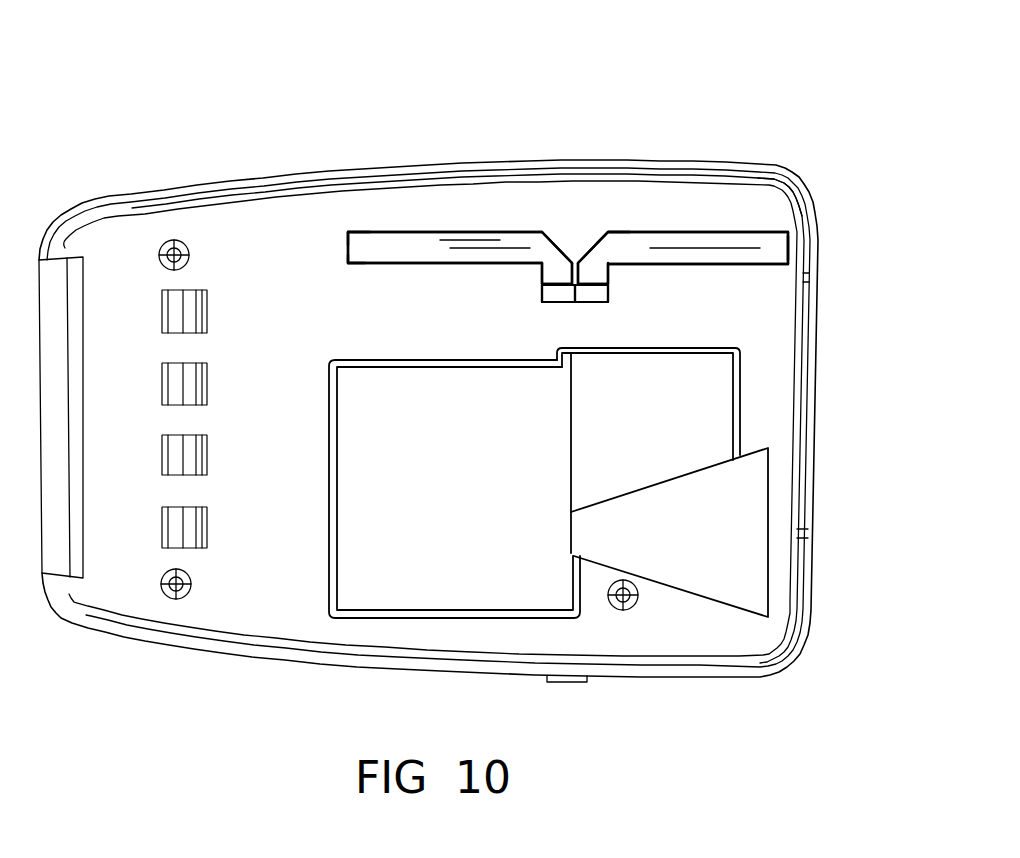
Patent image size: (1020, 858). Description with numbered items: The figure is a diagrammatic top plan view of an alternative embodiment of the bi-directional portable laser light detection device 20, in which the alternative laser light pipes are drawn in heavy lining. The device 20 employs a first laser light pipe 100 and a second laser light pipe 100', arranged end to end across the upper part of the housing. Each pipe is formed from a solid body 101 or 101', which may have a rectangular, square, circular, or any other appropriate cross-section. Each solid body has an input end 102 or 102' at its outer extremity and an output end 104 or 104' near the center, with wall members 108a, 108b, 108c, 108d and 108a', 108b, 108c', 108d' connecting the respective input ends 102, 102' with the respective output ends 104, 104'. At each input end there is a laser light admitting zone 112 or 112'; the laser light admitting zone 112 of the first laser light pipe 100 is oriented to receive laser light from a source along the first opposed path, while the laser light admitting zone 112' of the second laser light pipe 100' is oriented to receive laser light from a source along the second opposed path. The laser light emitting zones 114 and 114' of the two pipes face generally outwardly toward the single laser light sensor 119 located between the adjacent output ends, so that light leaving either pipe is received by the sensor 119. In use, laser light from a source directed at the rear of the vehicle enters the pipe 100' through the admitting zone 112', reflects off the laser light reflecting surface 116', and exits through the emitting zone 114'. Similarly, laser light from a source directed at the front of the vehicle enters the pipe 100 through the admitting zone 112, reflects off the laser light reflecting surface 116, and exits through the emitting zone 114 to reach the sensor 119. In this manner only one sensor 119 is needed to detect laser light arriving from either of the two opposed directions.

The bi-directional portable laser light detection device 20 is at (253, 56).
The second laser light pipe 100' is at (460, 192).
The first laser light pipe 100 is at (683, 191).
The solid body 101' is at (320, 189).
The solid body 101 is at (636, 219).
The input end 102' is at (302, 271).
The input end 102 is at (819, 185).
The output end 104' is at (512, 297).
The output end 104 is at (665, 299).
The wall member 108a' is at (445, 212).
The wall member 108a is at (698, 212).
The wall member 108b is at (513, 253).
The wall member 108c' is at (412, 290).
The wall member 108c is at (698, 283).
The wall member 108d' is at (447, 272).
The wall member 108d is at (837, 263).
The laser light admitting zone 112' is at (307, 236).
The laser light admitting zone 112 is at (835, 232).
The laser light emitting zone 114' is at (496, 320).
The laser light emitting zone 114 is at (632, 314).
The laser light reflecting surface 116' is at (533, 229).
The laser light reflecting surface 116 is at (583, 224).
The laser light sensor 119 is at (583, 297).